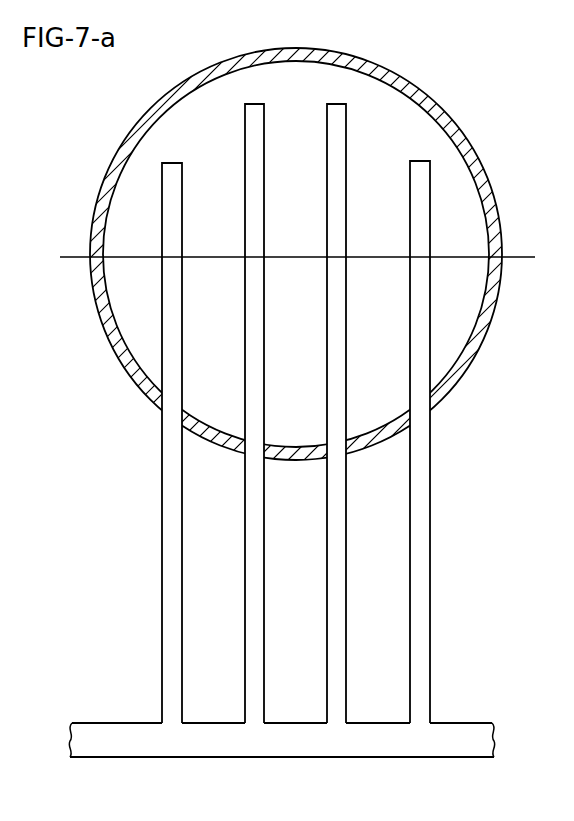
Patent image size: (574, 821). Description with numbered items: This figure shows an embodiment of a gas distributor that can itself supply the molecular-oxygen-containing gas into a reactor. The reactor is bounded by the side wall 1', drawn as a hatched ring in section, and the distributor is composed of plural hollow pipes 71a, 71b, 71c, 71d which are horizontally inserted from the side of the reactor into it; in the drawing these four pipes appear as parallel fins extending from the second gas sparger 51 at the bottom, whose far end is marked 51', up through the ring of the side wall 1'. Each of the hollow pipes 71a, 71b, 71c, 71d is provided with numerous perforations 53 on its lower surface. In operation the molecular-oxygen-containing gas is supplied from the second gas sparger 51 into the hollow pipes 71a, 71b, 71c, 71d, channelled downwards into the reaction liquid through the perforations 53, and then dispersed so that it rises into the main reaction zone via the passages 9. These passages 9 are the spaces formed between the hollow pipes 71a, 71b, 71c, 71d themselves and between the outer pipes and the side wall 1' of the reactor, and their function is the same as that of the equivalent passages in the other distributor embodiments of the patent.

The side wall of reactor 1' is at (287, 364).
The passage 9 is at (212, 198).
The second gas sparger 51 is at (263, 740).
The base plate end 51' is at (511, 738).
The perforation 53 is at (338, 138).
The fin 71a is at (177, 507).
The fin 71b is at (258, 516).
The fin 71c is at (343, 510).
The fin 71d is at (417, 197).